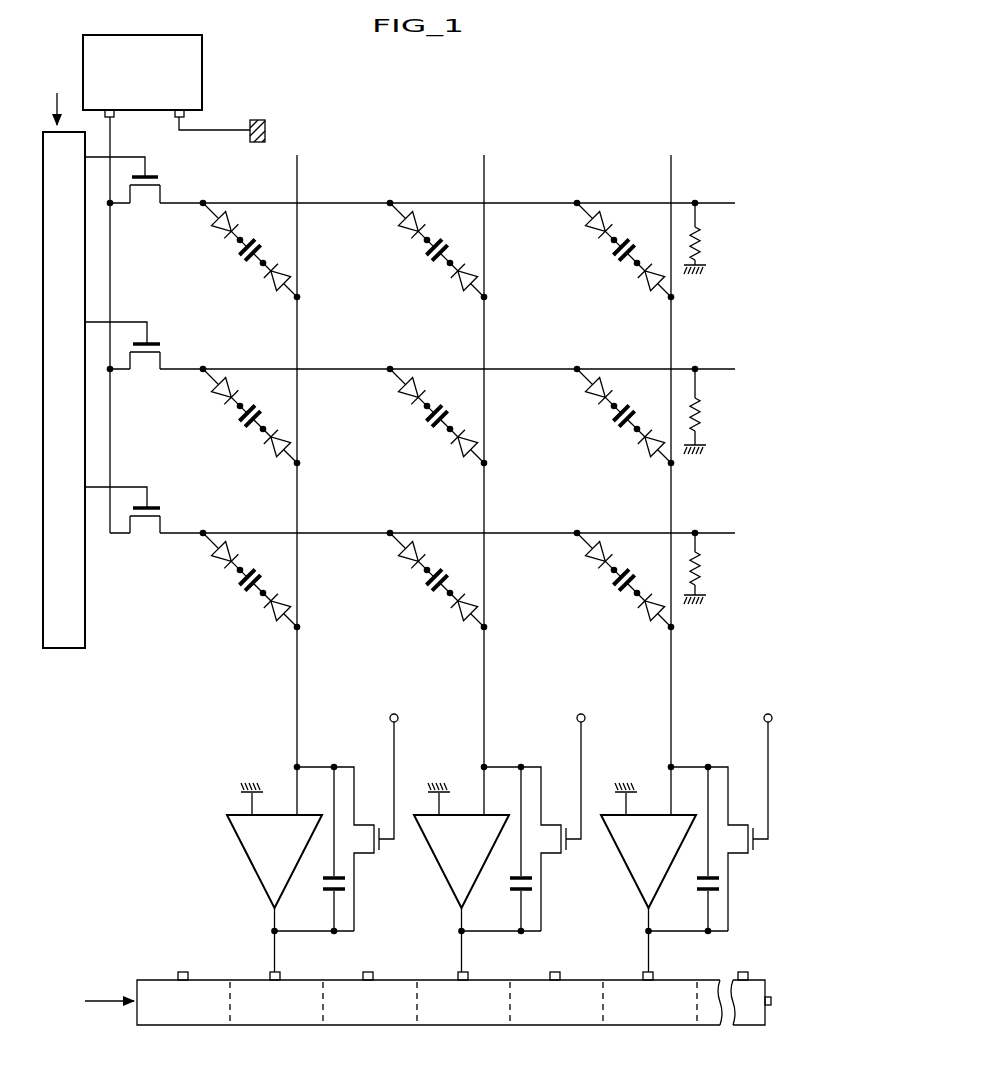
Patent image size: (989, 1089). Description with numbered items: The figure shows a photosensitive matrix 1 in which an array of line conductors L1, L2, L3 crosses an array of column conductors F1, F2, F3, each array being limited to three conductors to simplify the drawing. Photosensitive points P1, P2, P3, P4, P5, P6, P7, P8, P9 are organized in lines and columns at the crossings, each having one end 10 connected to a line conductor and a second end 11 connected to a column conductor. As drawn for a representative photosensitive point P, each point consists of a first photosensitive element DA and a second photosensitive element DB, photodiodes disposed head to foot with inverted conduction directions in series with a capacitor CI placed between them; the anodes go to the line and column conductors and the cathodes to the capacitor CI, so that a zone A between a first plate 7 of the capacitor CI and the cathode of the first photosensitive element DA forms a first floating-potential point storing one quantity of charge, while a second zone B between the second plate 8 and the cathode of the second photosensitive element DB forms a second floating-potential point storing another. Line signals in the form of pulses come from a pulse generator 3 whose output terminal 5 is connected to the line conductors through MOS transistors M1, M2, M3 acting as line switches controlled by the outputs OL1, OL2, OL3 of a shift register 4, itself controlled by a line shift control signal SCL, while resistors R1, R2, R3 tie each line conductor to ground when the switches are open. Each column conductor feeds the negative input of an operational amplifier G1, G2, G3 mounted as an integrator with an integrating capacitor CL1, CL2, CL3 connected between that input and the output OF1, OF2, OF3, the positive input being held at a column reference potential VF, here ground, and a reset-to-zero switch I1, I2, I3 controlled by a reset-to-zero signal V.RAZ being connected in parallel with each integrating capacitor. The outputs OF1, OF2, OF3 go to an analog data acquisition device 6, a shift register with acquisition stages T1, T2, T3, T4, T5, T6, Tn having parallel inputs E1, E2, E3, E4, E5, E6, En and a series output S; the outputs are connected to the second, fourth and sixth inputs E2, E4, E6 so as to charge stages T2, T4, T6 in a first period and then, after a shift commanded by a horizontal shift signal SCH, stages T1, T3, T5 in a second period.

The photosensitive matrix 1 is at (600, 86).
The pulse generator 3 is at (203, 62).
The shift register 4 is at (65, 650).
The output terminal 5 is at (115, 117).
The analog data acquisition device 6 is at (184, 116).
The first plate 7 is at (244, 254).
The second plate 8 is at (252, 264).
The end 10 is at (205, 201).
The second end 11 is at (300, 297).
The line shift control signal SCL is at (58, 97).
The MOS transistor M1 is at (174, 184).
The MOS transistor M2 is at (165, 331).
The MOS transistor M3 is at (164, 495).
The output OL1 is at (98, 160).
The output OL2 is at (97, 322).
The output OL3 is at (100, 487).
The photosensitive point P is at (215, 222).
The first photosensitive element DA is at (222, 232).
The zone A is at (241, 238).
The second zone B is at (264, 261).
The capacitor CI is at (246, 262).
The second photosensitive element DB is at (645, 280).
The photosensitive point P1 is at (221, 320).
The photosensitive point P2 is at (385, 308).
The photosensitive point P3 is at (578, 298).
The photosensitive point P4 is at (215, 485).
The photosensitive point P5 is at (388, 476).
The photosensitive point P6 is at (568, 468).
The photosensitive point P7 is at (185, 625).
The photosensitive point P8 is at (396, 651).
The photosensitive point P9 is at (586, 625).
The column conductor F1 is at (298, 173).
The column conductor F2 is at (485, 167).
The column conductor F3 is at (672, 167).
The line conductor L1 is at (713, 203).
The line conductor L2 is at (697, 369).
The line conductor L3 is at (700, 533).
The resistor R1 is at (703, 233).
The resistor R2 is at (703, 405).
The resistor R3 is at (703, 565).
The column reference potential VF is at (251, 800).
The operational amplifier G1 is at (245, 853).
The operational amplifier G2 is at (437, 860).
The operational amplifier G3 is at (623, 860).
The integrating capacitor CL1 is at (332, 893).
The integrating capacitor CL2 is at (519, 893).
The integrating capacitor CL3 is at (706, 893).
The reset-to-zero switch I1 is at (367, 805).
The reset-to-zero switch I2 is at (554, 805).
The reset-to-zero switch I3 is at (741, 805).
The reset-to-zero signal V.RAZ is at (582, 767).
The output OF1 is at (273, 931).
The output OF2 is at (460, 931).
The output OF3 is at (647, 931).
The parallel input E1 is at (188, 972).
The parallel input E2 is at (270, 975).
The parallel input E3 is at (373, 972).
The parallel input E4 is at (468, 972).
The parallel input E5 is at (556, 972).
The parallel input E6 is at (653, 972).
The parallel input En is at (748, 972).
The series output S is at (771, 1000).
The horizontal shift signal SCH is at (89, 1002).
The acquisition stage T1 is at (188, 1022).
The acquisition stage T2 is at (282, 1022).
The acquisition stage T3 is at (380, 1022).
The acquisition stage T4 is at (468, 1022).
The acquisition stage T5 is at (562, 1022).
The acquisition stage T6 is at (653, 1022).
The acquisition stage Tn is at (750, 1022).